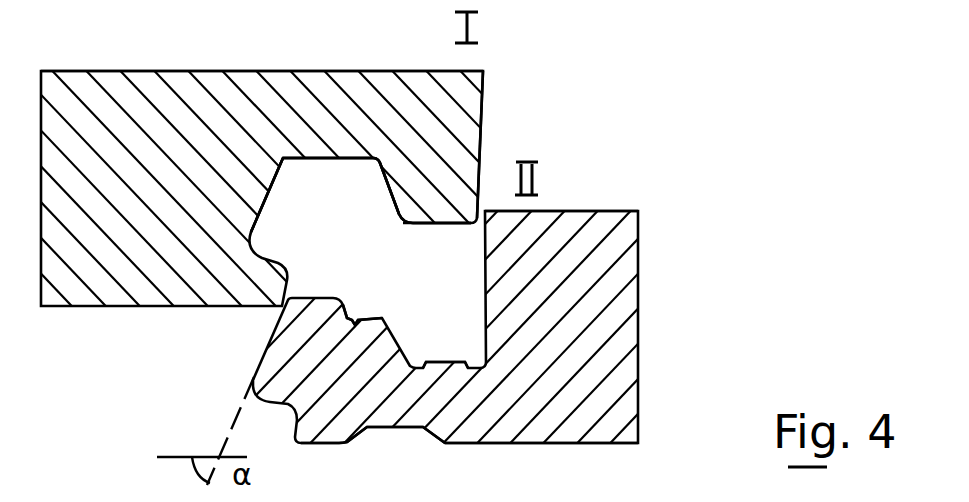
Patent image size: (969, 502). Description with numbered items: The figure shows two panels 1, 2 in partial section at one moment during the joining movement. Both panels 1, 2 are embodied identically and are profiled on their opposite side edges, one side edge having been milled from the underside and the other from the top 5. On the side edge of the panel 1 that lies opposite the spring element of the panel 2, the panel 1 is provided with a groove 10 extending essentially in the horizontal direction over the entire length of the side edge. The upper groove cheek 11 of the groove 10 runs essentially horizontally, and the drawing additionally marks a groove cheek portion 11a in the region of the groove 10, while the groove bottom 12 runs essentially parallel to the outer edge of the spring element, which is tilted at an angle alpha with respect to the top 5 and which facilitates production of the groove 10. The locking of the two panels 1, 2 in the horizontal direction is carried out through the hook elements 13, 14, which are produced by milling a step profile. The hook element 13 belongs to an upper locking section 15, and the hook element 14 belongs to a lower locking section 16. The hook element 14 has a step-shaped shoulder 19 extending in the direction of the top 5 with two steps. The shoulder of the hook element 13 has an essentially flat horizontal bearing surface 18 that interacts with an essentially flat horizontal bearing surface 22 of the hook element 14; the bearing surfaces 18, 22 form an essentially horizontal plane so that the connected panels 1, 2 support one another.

The panel 1 is at (455, 97).
The panel 2 is at (580, 222).
The top 5 is at (265, 72).
The groove 10 is at (340, 237).
The upper groove cheek 11 is at (328, 127).
The groove base surface 11a is at (354, 160).
The groove bottom 12 is at (268, 195).
The hook element 13 is at (498, 140).
The hook element 14 is at (565, 181).
The upper locking section 15 is at (374, 464).
The lower locking section 16 is at (505, 423).
The bearing surface 18 is at (437, 224).
The step-shaped shoulder 19 is at (375, 262).
The bearing surface 22 is at (456, 361).